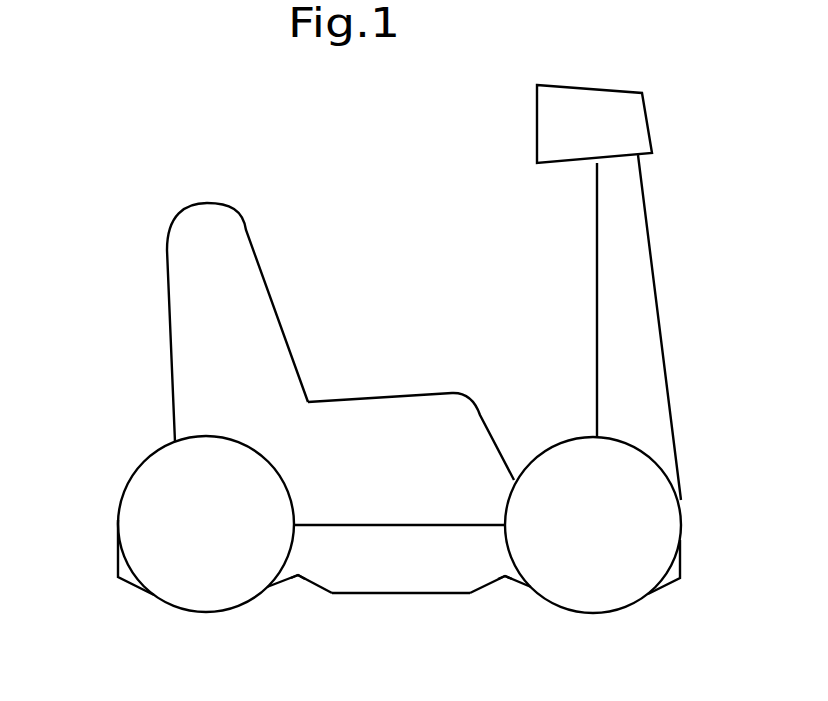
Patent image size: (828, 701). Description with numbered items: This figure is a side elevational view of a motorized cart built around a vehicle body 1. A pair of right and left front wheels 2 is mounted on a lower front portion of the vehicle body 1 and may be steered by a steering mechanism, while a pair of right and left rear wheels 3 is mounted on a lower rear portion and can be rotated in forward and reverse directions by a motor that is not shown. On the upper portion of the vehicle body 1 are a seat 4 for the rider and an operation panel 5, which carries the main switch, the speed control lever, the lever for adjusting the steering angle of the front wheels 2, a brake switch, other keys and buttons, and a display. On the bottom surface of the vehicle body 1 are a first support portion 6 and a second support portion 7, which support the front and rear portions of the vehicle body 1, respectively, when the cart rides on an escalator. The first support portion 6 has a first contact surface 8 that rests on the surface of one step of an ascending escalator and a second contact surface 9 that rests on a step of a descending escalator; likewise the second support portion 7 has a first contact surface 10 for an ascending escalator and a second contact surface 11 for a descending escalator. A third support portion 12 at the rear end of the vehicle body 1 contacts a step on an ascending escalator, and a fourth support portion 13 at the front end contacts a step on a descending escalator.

The vehicle body 1 is at (397, 582).
The front wheels 2 is at (655, 502).
The rear wheels 3 is at (167, 588).
The seat 4 is at (175, 283).
The operation panel 5 is at (573, 99).
The first support portion 6 is at (506, 606).
The second support portion 7 is at (300, 611).
The first contact surface 8 is at (518, 588).
The second contact surface 9 is at (483, 592).
The first contact surface 10 is at (317, 588).
The second contact surface 11 is at (275, 588).
The third support portion 12 is at (127, 592).
The fourth support portion 13 is at (663, 590).